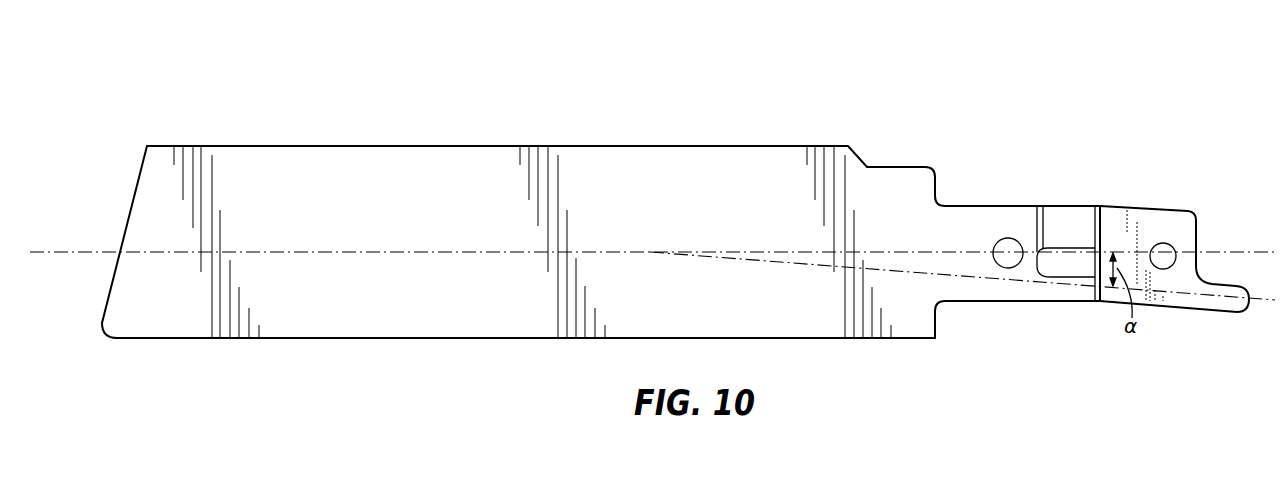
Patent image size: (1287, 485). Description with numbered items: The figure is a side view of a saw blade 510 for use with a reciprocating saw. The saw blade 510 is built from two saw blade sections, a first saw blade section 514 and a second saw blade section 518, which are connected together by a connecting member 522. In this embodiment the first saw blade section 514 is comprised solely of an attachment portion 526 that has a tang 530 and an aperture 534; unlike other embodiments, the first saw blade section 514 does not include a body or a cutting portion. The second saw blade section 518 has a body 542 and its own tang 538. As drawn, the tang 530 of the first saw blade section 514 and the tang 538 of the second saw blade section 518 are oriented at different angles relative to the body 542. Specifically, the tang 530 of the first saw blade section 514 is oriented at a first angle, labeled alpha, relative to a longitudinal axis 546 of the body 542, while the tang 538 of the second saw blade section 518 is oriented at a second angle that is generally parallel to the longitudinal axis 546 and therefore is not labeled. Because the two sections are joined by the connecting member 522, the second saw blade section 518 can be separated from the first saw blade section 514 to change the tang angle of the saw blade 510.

The saw blade 510 is at (946, 112).
The first saw blade section 514 is at (1111, 207).
The second saw blade section 518 is at (368, 162).
The connecting member 522 is at (1071, 222).
The attachment portion 526 is at (1170, 212).
The tang 530 is at (1230, 305).
The aperture 534 is at (1168, 262).
The tang 538 is at (1066, 292).
The body 542 is at (723, 168).
The longitudinal axis 546 is at (380, 250).